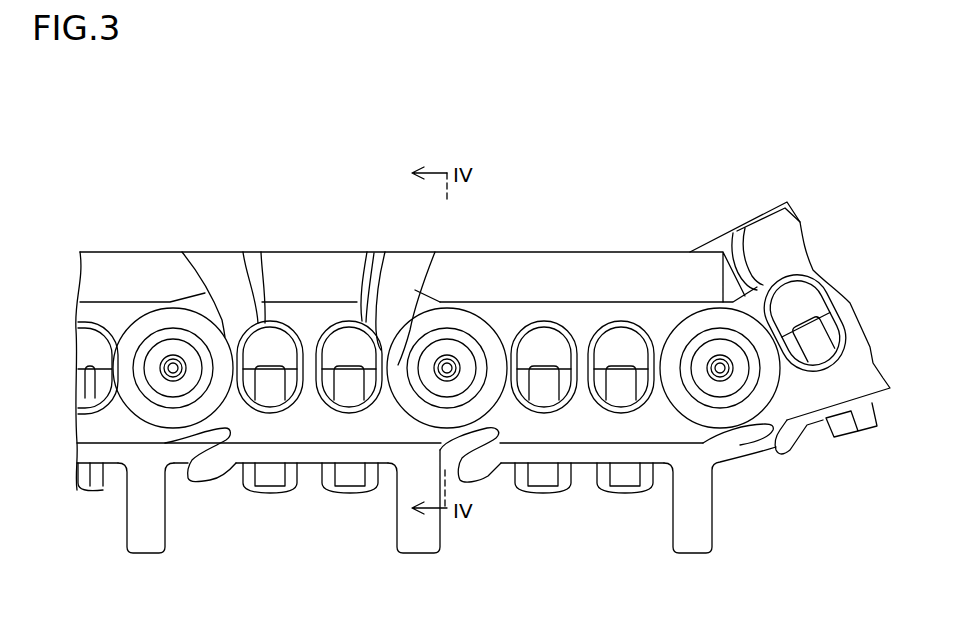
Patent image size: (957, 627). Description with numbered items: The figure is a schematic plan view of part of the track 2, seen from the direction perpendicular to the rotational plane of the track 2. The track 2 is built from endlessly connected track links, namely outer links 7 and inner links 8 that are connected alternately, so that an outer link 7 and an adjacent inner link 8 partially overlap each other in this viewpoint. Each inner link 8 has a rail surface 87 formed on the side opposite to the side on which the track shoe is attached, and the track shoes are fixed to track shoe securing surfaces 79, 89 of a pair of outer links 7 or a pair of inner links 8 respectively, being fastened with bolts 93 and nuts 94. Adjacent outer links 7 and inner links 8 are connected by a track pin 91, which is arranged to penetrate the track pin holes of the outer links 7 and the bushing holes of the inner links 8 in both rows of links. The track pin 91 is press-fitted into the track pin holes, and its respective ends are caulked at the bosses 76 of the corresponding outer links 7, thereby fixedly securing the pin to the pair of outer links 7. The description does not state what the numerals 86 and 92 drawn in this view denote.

The track 2 is at (320, 230).
The outer link 7 is at (488, 283).
The inner link 8 is at (407, 272).
The boss 76 is at (170, 320).
The track shoe securing surface 79 is at (527, 443).
The lower flange 86 is at (583, 453).
The rail surface 87 is at (216, 248).
The track shoe securing surface 89 is at (252, 443).
The track pin 91 is at (172, 390).
The bore ring 92 is at (143, 393).
The bolt 93 is at (270, 478).
The nut 94 is at (272, 383).